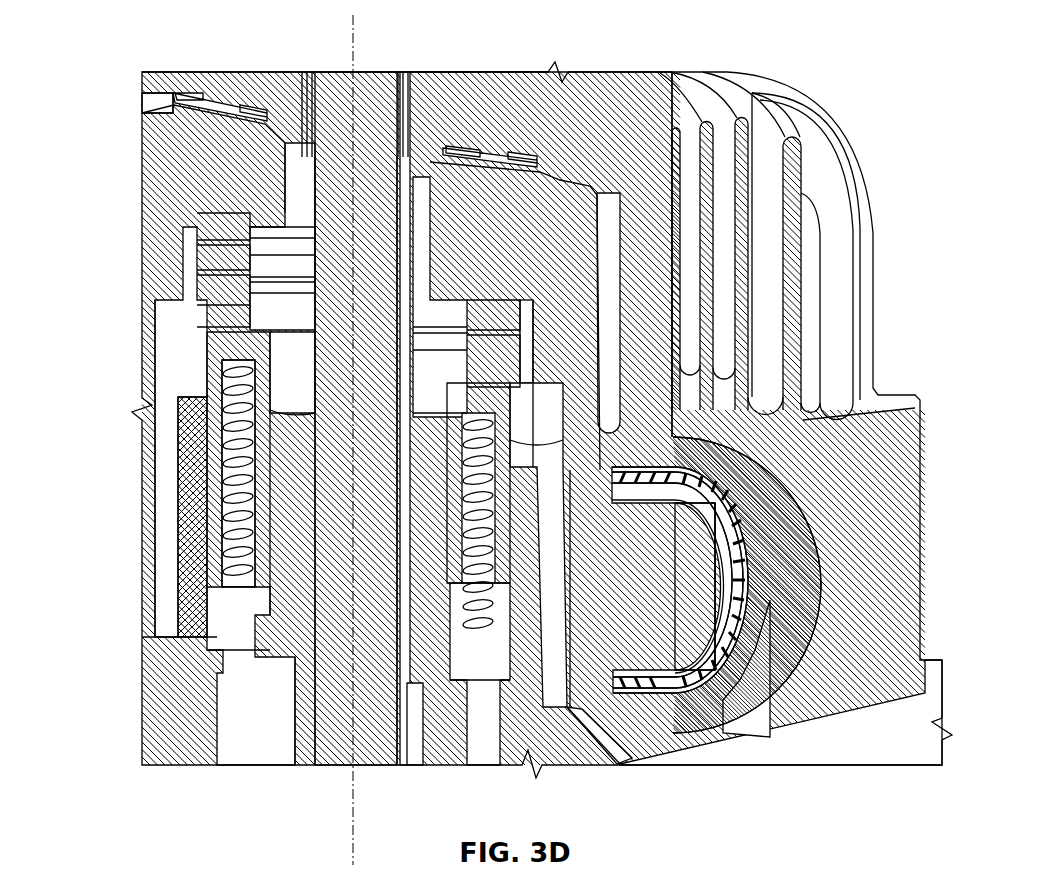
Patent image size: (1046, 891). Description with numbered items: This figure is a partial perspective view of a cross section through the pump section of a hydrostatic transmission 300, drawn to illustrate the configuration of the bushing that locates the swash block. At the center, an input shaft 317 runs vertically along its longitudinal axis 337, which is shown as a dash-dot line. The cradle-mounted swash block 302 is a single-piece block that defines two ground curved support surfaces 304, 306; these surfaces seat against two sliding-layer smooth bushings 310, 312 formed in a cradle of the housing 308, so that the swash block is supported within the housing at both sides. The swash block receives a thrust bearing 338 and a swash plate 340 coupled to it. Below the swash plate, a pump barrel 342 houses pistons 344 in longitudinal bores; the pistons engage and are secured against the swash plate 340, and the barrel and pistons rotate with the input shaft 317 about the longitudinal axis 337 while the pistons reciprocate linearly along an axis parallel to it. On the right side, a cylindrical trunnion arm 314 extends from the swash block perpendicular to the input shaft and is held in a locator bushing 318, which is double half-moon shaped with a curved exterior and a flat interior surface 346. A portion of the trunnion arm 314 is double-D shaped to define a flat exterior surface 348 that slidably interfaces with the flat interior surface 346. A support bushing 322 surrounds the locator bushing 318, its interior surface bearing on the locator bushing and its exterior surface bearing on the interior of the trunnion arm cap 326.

The hydrostatic transmission 300 is at (125, 107).
The cradle-mounted swash block 302 is at (188, 183).
The curved support surface 304 is at (493, 175).
The curved support surface 306 is at (205, 118).
The housing 308 is at (523, 103).
The sliding-layer smooth bushing 310 is at (540, 152).
The sliding-layer smooth bushing 312 is at (255, 100).
The trunnion arm 314 is at (710, 603).
The input shaft 317 is at (372, 113).
The locator bushing 318 is at (723, 562).
The support bushing 322 is at (727, 503).
The trunnion arm cap 326 is at (737, 470).
The longitudinal axis 337 is at (352, 33).
The thrust bearing 338 is at (498, 305).
The swash plate 340 is at (486, 372).
The pump barrel 342 is at (205, 540).
The piston 344 is at (213, 445).
The flat interior surface 346 is at (700, 498).
The flat exterior surface 348 is at (722, 542).